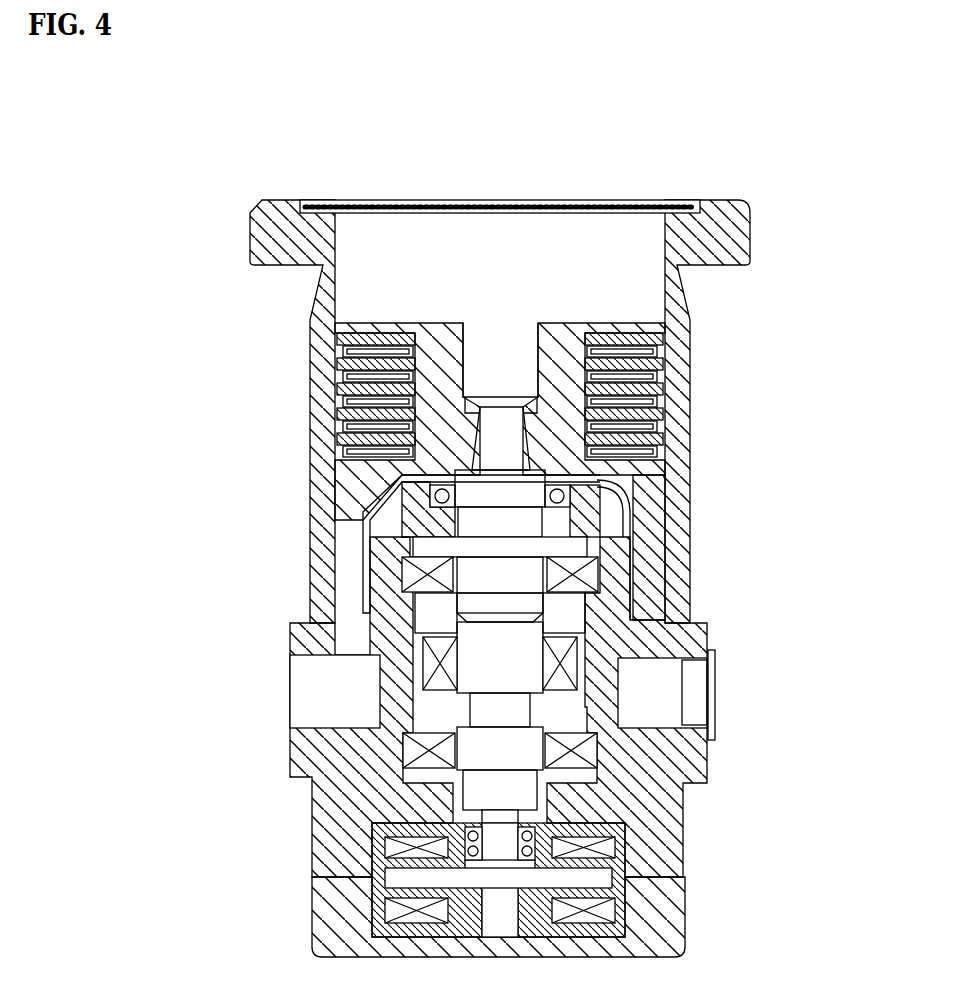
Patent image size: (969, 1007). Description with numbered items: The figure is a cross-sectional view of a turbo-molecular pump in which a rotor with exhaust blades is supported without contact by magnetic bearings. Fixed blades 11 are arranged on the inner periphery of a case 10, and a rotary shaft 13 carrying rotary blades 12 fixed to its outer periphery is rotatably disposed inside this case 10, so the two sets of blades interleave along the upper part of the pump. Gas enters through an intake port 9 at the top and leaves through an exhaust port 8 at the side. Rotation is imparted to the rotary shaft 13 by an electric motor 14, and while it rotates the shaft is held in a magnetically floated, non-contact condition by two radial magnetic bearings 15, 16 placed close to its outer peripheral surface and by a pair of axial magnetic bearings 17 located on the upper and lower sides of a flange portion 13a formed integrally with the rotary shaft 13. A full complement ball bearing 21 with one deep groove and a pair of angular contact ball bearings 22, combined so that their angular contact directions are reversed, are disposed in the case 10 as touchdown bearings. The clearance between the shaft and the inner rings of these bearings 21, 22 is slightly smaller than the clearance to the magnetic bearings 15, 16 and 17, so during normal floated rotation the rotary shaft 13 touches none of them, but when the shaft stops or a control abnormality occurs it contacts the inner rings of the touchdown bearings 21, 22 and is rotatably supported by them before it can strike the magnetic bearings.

The exhaust port 8 is at (318, 698).
The intake port 9 is at (518, 262).
The case 10 is at (680, 350).
The fixed blades 11 is at (310, 325).
The rotary blades 12 is at (333, 388).
The rotary shaft 13 is at (507, 576).
The flange portion 13a is at (400, 878).
The electric motor 14 is at (570, 667).
The radial magnetic bearing 15 is at (608, 600).
The radial magnetic bearing 16 is at (583, 757).
The axial magnetic bearings 17 is at (592, 913).
The full complement ball bearing 21 is at (372, 500).
The angular contact ball bearings 22 is at (465, 858).